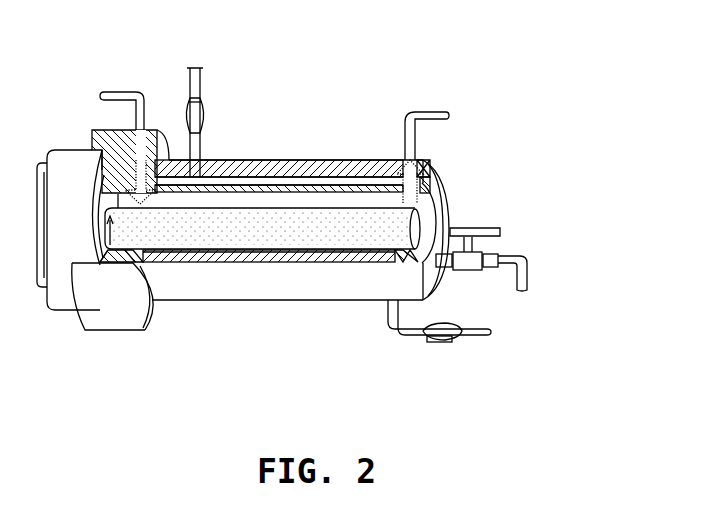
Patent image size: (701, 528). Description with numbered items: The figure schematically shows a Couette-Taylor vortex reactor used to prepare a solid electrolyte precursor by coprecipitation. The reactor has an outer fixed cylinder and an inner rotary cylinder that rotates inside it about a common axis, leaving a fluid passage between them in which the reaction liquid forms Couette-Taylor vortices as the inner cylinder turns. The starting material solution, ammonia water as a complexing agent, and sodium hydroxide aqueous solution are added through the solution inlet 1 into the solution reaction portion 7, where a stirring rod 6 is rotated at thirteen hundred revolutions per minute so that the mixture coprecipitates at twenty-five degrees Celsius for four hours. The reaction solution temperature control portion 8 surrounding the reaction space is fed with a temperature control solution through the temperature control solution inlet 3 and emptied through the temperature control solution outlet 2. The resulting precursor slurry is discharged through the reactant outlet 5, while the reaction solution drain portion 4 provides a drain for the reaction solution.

The solution inlet 1 is at (108, 90).
The temperature control solution outlet 2 is at (202, 79).
The temperature control solution inlet 3 is at (477, 338).
The reaction solution drain portion 4 is at (528, 279).
The reactant outlet 5 is at (430, 110).
The stirring rod 6 is at (327, 235).
The solution reaction portion 7 is at (263, 200).
The reaction solution temperature control portion 8 is at (300, 183).